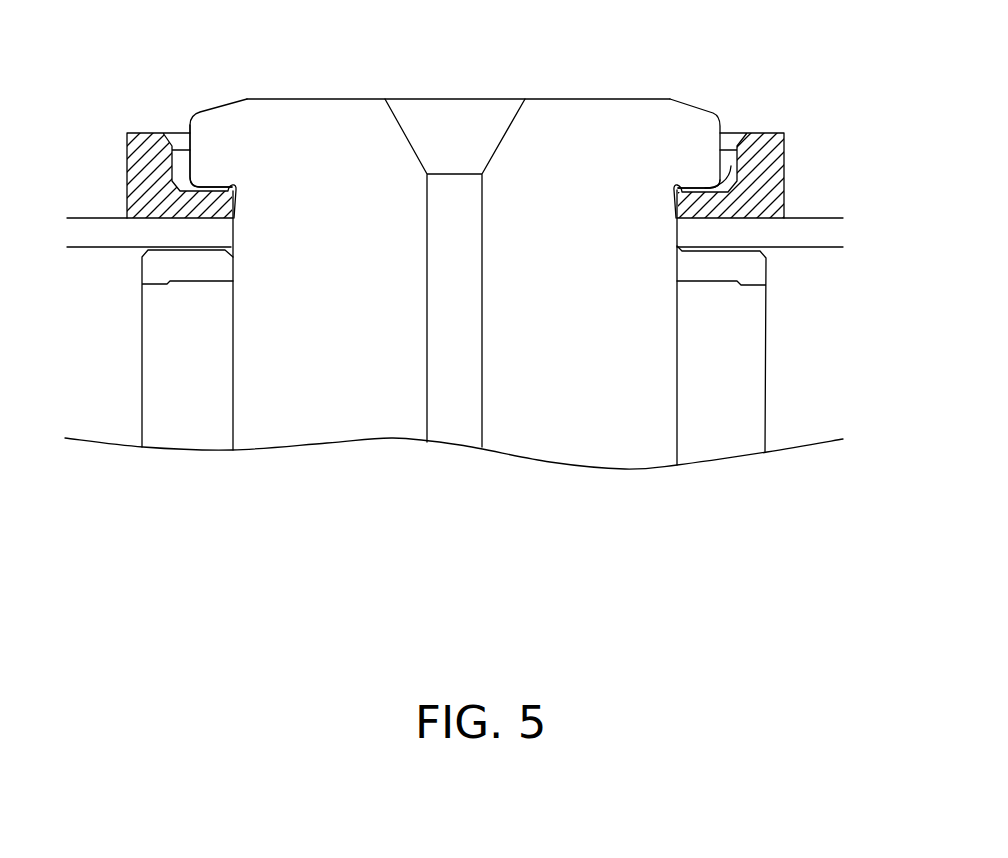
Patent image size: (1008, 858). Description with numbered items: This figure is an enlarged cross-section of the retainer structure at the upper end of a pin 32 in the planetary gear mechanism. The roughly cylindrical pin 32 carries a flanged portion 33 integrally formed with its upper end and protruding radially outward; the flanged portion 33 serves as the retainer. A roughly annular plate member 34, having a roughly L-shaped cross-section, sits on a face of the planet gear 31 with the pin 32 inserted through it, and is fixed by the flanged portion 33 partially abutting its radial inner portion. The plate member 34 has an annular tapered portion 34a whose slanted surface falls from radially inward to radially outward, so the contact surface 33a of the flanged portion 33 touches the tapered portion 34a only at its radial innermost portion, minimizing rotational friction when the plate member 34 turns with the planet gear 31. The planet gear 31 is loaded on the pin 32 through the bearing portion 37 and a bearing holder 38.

The planet gear 31 is at (102, 420).
The pin 32 is at (368, 420).
The flanged portion 33 is at (688, 122).
The contact surface 33a is at (731, 166).
The plate member 34 is at (143, 143).
The tapered portion 34a is at (216, 193).
The bearing portion 37 is at (722, 427).
The bearing holder 38 is at (185, 268).